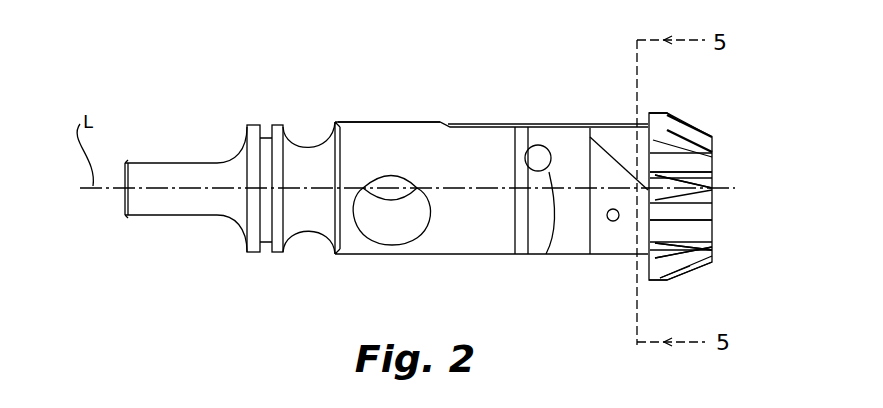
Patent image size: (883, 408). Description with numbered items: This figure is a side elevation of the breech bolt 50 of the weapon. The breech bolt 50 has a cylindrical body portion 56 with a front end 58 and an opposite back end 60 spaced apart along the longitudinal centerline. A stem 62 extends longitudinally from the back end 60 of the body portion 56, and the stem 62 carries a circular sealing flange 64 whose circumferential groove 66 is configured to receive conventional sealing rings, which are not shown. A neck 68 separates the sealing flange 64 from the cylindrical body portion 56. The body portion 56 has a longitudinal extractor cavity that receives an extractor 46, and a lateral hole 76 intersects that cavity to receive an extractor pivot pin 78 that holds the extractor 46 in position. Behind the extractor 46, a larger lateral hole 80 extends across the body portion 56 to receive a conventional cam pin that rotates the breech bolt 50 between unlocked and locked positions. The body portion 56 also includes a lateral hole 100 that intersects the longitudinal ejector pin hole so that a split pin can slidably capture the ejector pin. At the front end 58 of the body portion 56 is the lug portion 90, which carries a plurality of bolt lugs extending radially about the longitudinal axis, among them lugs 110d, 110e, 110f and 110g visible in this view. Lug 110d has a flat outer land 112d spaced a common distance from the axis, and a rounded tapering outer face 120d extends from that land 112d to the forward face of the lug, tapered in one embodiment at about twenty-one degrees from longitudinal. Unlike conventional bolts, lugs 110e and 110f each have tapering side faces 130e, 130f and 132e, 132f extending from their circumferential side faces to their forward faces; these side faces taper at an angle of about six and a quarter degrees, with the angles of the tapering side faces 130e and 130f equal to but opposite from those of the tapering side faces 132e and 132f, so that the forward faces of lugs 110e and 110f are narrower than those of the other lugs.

The extractor 46 is at (475, 127).
The breech bolt 50 is at (440, 122).
The cylindrical body portion 56 is at (436, 255).
The front end 58 is at (713, 138).
The back end 60 is at (125, 213).
The stem 62 is at (197, 216).
The circular sealing flange 64 is at (285, 253).
The groove 66 is at (268, 253).
The neck 68 is at (307, 147).
The lateral hole 76 is at (539, 151).
The extractor pivot pin 78 is at (546, 254).
The larger lateral hole 80 is at (379, 238).
The lug portion 90 is at (667, 114).
The lateral hole 100 is at (609, 221).
The bolt lug 110d is at (648, 278).
The bolt lug 110e is at (713, 250).
The bolt lug 110f is at (578, 142).
The bolt lug 110g is at (648, 116).
The flat outer land 112d is at (667, 279).
The rounded tapering outer face 120d is at (705, 268).
The tapering side face 130e is at (713, 263).
The tapering side face 130f is at (713, 190).
The tapering side face 132e is at (700, 232).
The tapering side face 132f is at (713, 176).